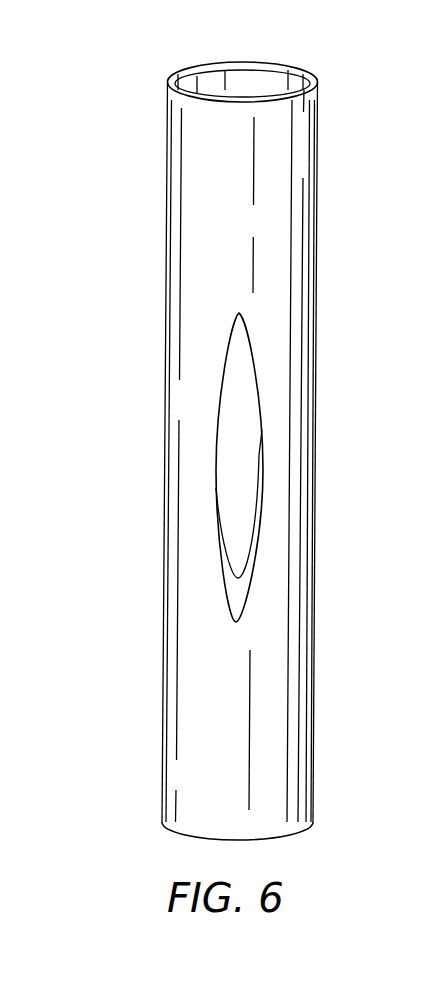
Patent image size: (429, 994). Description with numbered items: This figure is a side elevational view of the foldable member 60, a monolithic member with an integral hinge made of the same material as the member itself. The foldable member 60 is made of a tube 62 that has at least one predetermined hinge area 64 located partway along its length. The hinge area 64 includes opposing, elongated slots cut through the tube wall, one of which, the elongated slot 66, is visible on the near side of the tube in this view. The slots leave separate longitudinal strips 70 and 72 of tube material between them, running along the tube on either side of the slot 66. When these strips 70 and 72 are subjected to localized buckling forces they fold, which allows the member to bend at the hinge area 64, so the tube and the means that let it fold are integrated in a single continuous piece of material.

The foldable member 60 is at (143, 292).
The tube 62 is at (297, 138).
The hinge area 64 is at (320, 452).
The elongated slot 66 is at (232, 523).
The longitudinal strip 70 is at (193, 426).
The longitudinal strip 72 is at (277, 378).